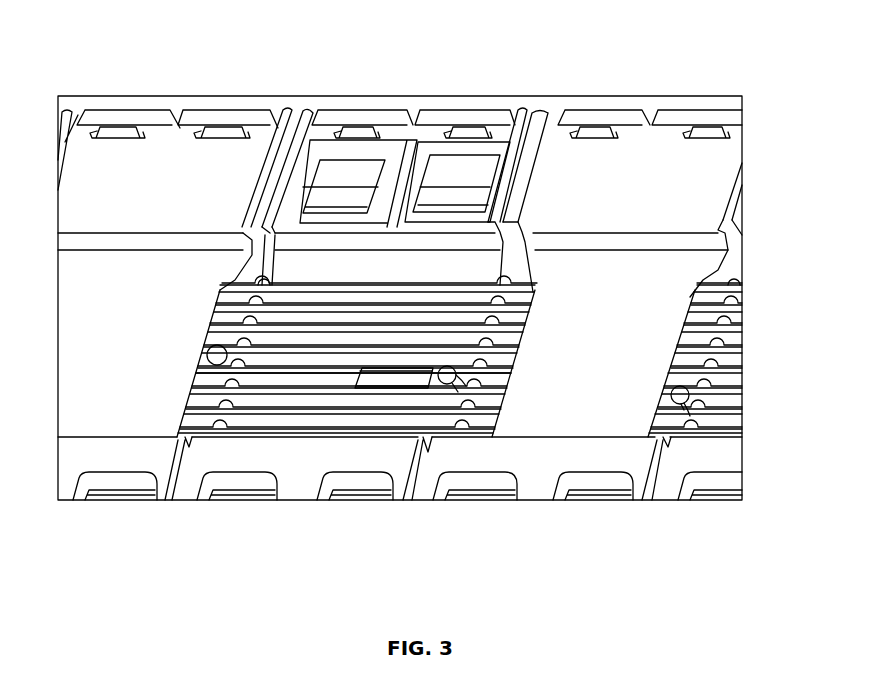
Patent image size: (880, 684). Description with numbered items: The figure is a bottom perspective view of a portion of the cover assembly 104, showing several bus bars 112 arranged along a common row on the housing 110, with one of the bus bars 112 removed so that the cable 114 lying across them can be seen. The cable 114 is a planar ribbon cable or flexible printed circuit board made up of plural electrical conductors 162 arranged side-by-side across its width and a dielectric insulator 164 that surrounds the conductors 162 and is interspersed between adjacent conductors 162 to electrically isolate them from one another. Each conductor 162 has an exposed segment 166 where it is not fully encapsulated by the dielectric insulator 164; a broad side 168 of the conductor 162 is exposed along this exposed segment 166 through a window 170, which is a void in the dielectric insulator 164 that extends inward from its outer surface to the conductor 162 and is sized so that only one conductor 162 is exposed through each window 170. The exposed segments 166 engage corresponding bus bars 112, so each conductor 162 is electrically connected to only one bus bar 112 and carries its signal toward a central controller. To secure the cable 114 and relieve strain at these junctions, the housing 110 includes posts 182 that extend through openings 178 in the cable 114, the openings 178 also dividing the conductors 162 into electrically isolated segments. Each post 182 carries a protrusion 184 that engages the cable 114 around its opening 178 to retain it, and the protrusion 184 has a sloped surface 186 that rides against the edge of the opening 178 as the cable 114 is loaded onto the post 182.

The cover assembly 104 is at (225, 33).
The housing 110 is at (346, 270).
The bus bar 112 is at (108, 170).
The cable 114 is at (250, 413).
The electrical conductor 162 is at (275, 420).
The dielectric insulator 164 is at (297, 400).
The exposed segment 166 is at (377, 377).
The broad side 168 is at (407, 378).
The window 170 is at (418, 394).
The opening 178 is at (225, 346).
The post 182 is at (212, 345).
The protrusion 184 is at (462, 381).
The sloped surface 186 is at (456, 379).